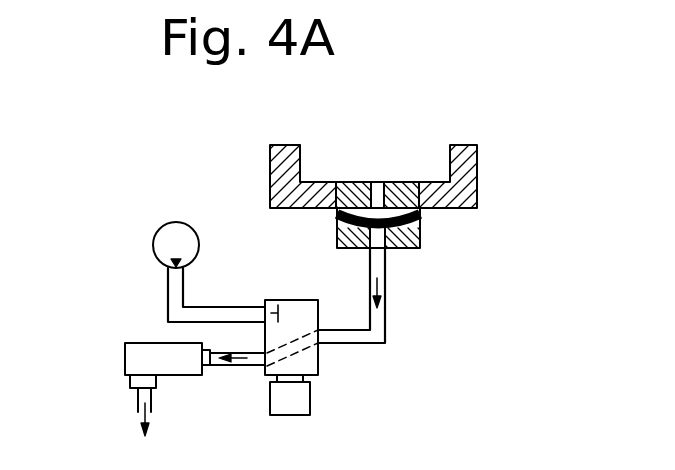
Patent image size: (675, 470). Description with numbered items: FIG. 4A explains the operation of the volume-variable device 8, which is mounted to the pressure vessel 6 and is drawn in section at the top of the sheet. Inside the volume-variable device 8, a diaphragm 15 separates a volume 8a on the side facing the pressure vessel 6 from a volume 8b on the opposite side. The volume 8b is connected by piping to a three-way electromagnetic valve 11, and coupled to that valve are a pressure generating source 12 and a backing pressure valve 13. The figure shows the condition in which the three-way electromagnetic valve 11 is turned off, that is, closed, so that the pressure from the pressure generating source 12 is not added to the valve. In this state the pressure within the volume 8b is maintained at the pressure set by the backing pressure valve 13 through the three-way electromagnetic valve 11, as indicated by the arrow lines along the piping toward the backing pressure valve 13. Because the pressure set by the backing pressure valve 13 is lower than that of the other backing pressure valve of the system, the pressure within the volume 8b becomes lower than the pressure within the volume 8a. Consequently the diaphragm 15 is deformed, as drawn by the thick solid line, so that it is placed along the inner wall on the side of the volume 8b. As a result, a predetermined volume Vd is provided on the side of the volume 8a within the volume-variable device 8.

The pressure vessel 6 is at (477, 181).
The volume-variable device 8 is at (352, 250).
The volume 8a is at (377, 192).
The volume 8b is at (377, 240).
The diaphragm 15 is at (336, 226).
The predetermined volume Vd is at (420, 229).
The three-way electromagnetic valve 11 is at (313, 362).
The pressure generating source 12 is at (157, 233).
The backing pressure valve 13 is at (137, 352).